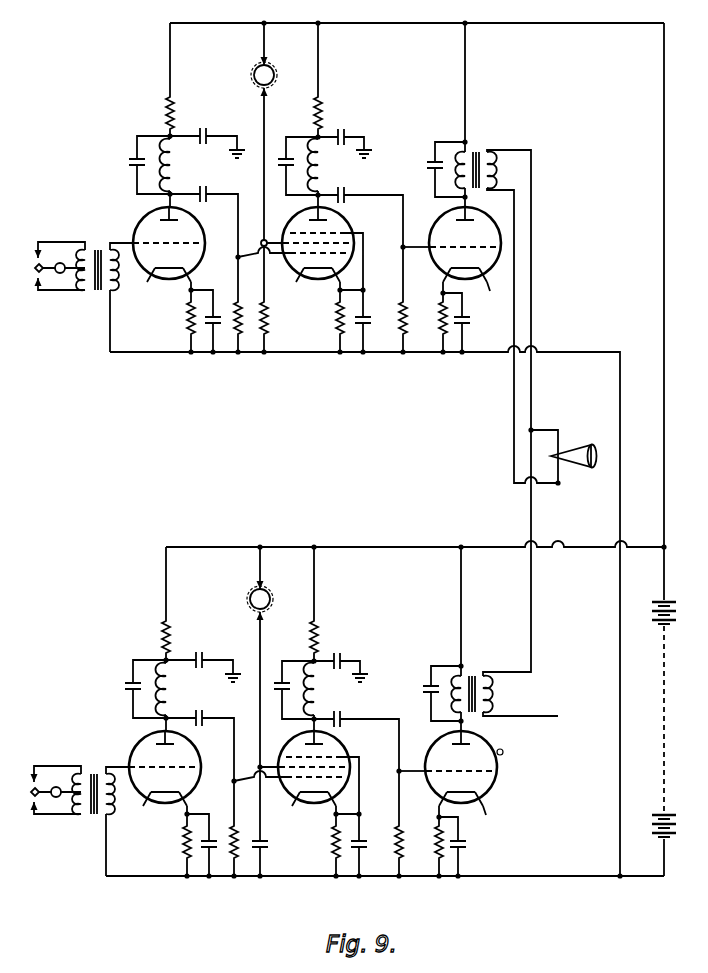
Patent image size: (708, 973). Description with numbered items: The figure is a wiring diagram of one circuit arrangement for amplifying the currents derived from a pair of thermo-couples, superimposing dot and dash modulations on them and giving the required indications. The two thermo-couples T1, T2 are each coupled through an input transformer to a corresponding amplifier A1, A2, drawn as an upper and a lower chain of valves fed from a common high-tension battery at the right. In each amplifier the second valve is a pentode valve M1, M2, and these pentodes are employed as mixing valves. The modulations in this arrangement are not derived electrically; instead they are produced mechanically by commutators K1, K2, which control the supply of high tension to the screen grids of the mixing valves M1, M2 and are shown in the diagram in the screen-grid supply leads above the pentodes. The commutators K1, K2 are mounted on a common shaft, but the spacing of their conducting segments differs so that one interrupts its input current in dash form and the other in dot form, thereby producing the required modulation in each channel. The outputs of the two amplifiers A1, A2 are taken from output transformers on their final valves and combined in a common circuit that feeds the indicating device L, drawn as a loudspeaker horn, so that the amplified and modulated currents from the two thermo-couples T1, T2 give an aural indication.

The thermo-couple T1 is at (59, 274).
The thermo-couple T2 is at (60, 818).
The amplifier A1 is at (166, 326).
The amplifier A2 is at (202, 826).
The commutator K1 is at (274, 76).
The commutator K2 is at (272, 713).
The pentode valve M1 is at (311, 286).
The pentode valve M2 is at (300, 805).
The loudspeaker L is at (576, 450).